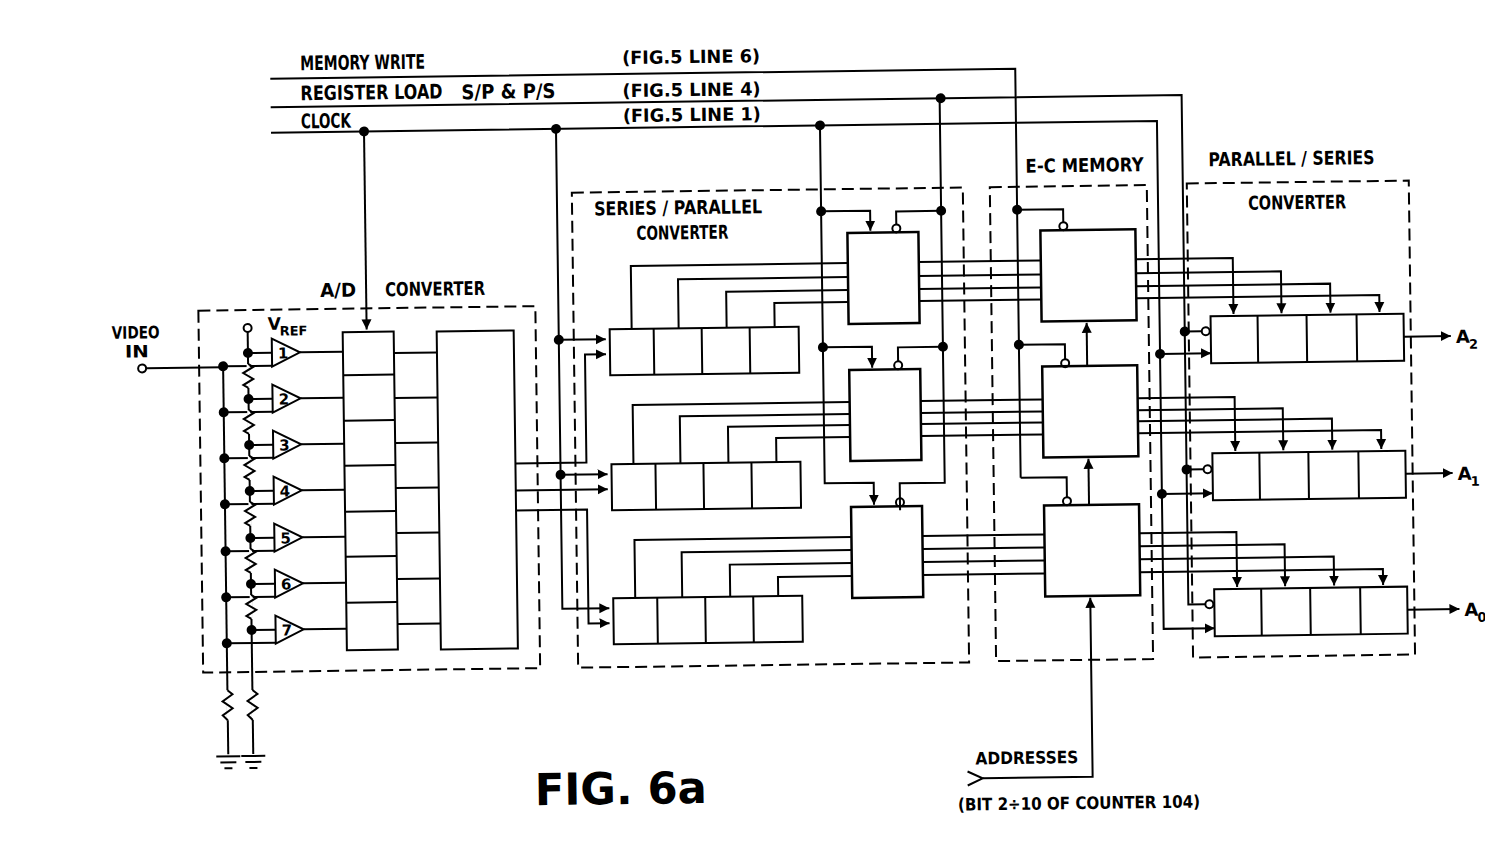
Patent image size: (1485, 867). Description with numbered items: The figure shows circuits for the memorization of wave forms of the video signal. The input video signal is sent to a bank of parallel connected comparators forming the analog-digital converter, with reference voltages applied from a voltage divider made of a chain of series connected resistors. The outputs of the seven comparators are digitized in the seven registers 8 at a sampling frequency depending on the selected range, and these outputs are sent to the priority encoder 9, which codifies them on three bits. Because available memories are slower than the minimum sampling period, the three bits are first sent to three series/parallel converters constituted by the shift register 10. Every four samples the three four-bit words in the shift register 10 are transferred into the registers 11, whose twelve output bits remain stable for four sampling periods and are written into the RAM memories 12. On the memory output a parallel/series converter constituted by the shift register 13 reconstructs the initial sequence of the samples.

The registers 8 is at (372, 653).
The priority encoder 9 is at (472, 650).
The shift register 10 is at (718, 648).
The registers 11 is at (890, 604).
The RAM memories 12 is at (1053, 606).
The shift register 13 is at (1313, 651).